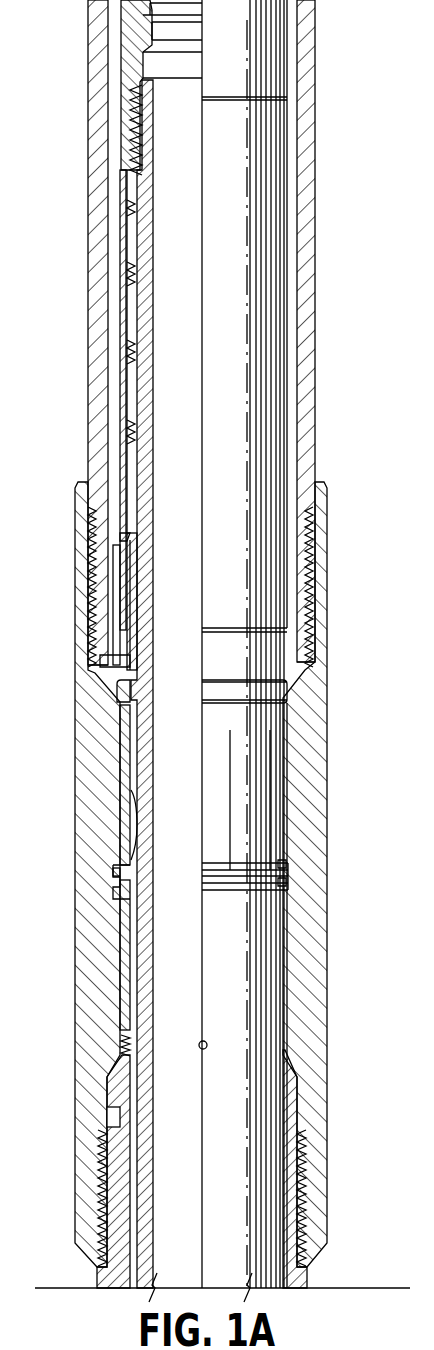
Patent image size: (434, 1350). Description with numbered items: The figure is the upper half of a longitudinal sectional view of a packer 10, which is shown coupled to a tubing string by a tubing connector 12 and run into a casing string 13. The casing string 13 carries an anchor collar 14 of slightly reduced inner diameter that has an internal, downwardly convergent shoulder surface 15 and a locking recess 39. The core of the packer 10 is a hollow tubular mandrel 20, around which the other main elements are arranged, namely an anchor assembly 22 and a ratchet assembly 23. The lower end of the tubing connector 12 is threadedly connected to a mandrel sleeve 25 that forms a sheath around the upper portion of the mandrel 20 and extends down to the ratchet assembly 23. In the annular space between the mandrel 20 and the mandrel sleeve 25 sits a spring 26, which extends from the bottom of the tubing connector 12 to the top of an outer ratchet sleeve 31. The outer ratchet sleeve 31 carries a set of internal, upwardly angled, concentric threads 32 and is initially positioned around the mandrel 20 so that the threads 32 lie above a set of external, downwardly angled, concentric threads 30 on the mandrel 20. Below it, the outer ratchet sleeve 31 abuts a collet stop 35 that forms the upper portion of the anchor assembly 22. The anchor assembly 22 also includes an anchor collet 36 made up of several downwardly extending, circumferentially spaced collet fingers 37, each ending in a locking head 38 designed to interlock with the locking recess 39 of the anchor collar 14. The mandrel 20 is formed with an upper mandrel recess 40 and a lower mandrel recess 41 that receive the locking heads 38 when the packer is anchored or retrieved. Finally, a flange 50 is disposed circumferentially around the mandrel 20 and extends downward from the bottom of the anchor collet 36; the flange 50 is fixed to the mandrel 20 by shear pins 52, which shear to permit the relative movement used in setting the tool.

The packer 10 is at (433, 938).
The tubing connector 12 is at (122, 47).
The casing string 13 is at (97, 85).
The anchor collar 14 is at (83, 843).
The shoulder surface 15 is at (117, 695).
The mandrel 20 is at (140, 400).
The anchor assembly 22 is at (98, 888).
The ratchet assembly 23 is at (117, 623).
The mandrel sleeve 25 is at (120, 228).
The spring 26 is at (127, 276).
The threads 30 is at (130, 593).
The outer ratchet sleeve 31 is at (127, 567).
The threads 32 is at (120, 542).
The collet stop 35 is at (130, 653).
The anchor collet 36 is at (123, 735).
The collet fingers 37 is at (280, 783).
The locking head 38 is at (287, 868).
The locking recess 39 is at (115, 873).
The upper mandrel recess 40 is at (138, 823).
The lower mandrel recess 41 is at (133, 992).
The flange 50 is at (118, 1102).
The shear pins 52 is at (123, 1045).